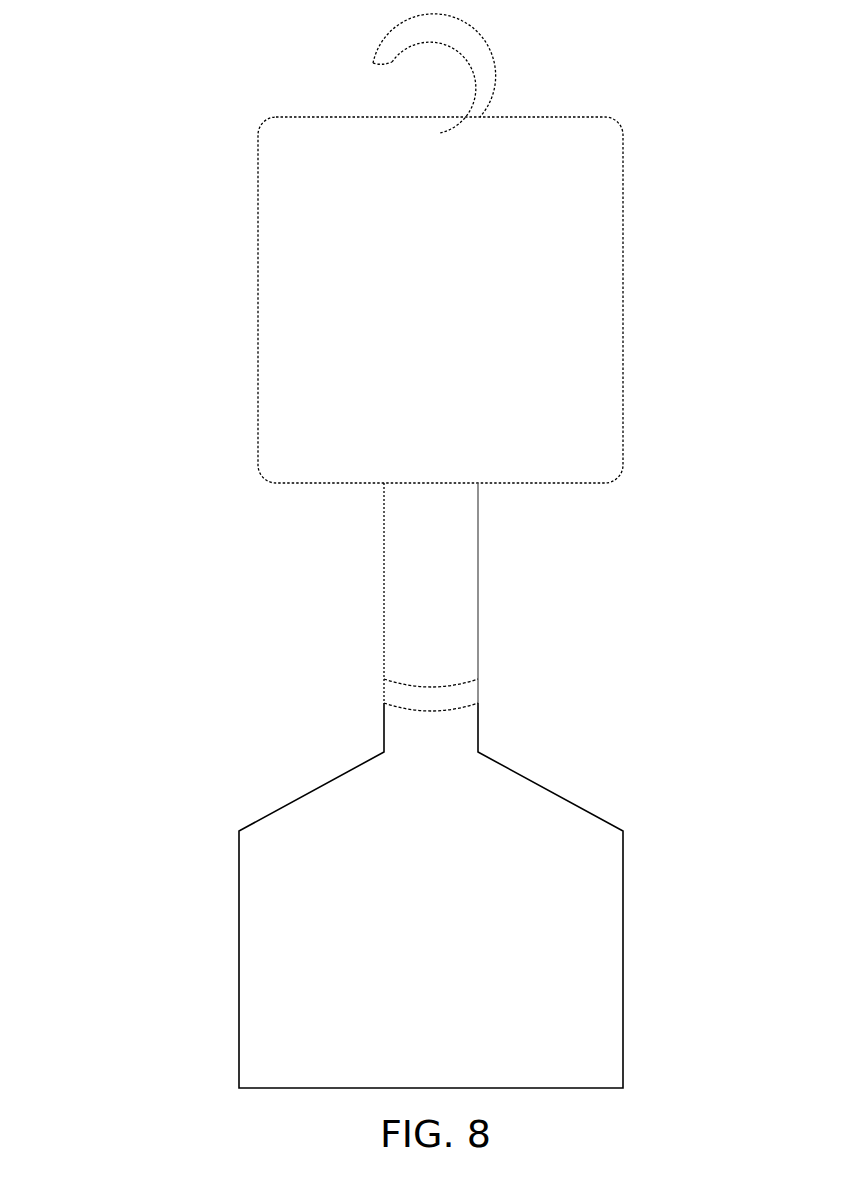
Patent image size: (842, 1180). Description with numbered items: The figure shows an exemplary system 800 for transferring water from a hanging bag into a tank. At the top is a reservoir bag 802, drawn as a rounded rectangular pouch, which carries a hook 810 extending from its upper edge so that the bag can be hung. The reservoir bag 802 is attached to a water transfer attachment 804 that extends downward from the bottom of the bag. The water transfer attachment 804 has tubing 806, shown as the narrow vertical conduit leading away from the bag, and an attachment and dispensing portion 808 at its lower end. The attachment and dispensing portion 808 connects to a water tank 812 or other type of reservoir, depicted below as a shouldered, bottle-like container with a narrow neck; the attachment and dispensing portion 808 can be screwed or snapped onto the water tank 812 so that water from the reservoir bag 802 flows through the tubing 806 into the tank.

The system 800 is at (118, 874).
The reservoir bag 802 is at (283, 483).
The water transfer attachment 804 is at (478, 587).
The tubing 806 is at (465, 648).
The attachment and dispensing portion 808 is at (384, 703).
The hook 810 is at (372, 60).
The water tank 812 is at (287, 1060).